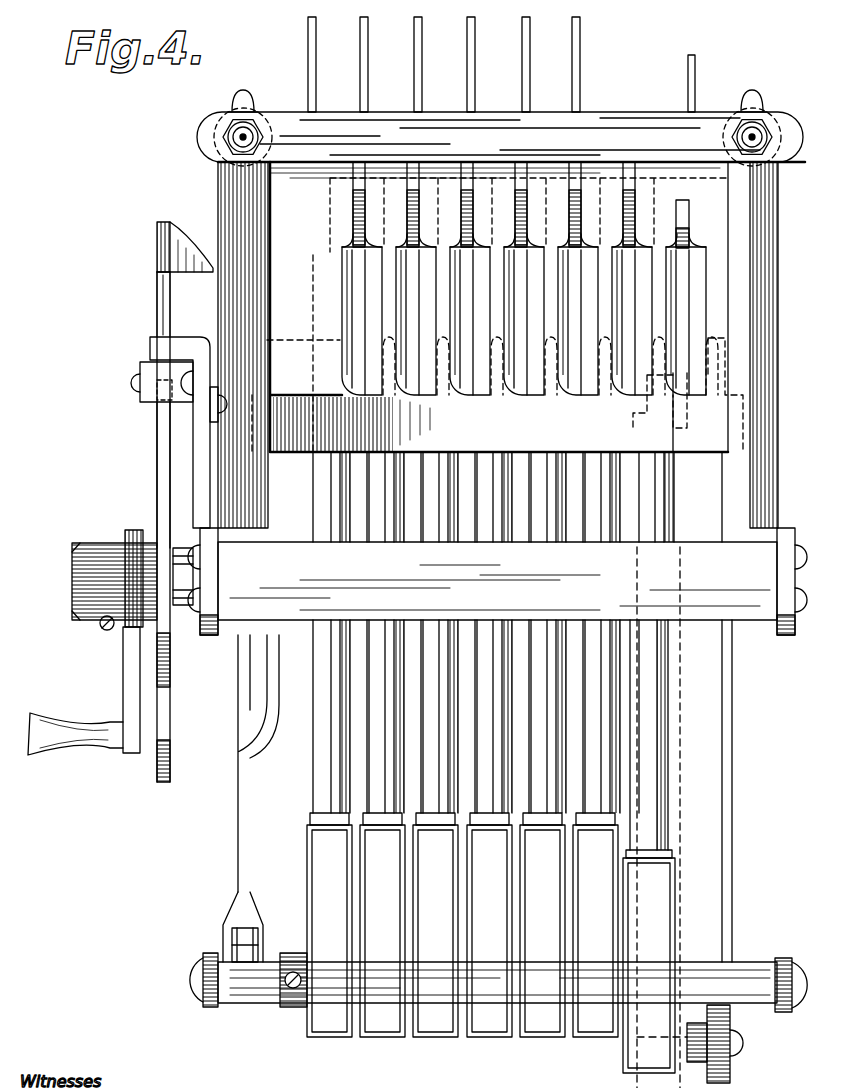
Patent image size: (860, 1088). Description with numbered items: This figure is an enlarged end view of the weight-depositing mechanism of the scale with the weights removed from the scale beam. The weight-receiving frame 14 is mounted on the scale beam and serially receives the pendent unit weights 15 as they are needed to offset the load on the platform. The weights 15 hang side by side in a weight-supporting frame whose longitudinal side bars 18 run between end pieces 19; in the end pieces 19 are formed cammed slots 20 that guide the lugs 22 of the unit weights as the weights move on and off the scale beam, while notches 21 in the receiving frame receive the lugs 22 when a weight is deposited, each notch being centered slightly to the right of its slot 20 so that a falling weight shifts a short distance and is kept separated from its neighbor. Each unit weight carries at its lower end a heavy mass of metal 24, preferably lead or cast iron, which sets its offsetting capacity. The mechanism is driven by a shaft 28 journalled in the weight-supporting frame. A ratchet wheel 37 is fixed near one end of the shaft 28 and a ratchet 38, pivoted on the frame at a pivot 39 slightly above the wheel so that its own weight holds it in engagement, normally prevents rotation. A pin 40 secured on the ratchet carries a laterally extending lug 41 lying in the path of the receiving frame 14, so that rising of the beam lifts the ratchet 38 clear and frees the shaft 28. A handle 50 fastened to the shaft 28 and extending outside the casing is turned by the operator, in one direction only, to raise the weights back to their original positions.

The weight-receiving frame 14 is at (697, 455).
The weights 15 is at (593, 1022).
The longitudinal side bars 18 is at (766, 133).
The end pieces 19 is at (685, 185).
The cammed slots 20 is at (362, 278).
The notches 21 is at (527, 403).
The lugs 22 is at (360, 185).
The heavy masses of metal 24 is at (491, 943).
The shaft 28 is at (183, 606).
The ratchet wheel 37 is at (166, 723).
The ratchet 38 is at (150, 362).
The pivot 39 is at (138, 382).
The pin 40 is at (163, 318).
The laterally extending lug 41 is at (200, 270).
The handle 50 is at (52, 727).